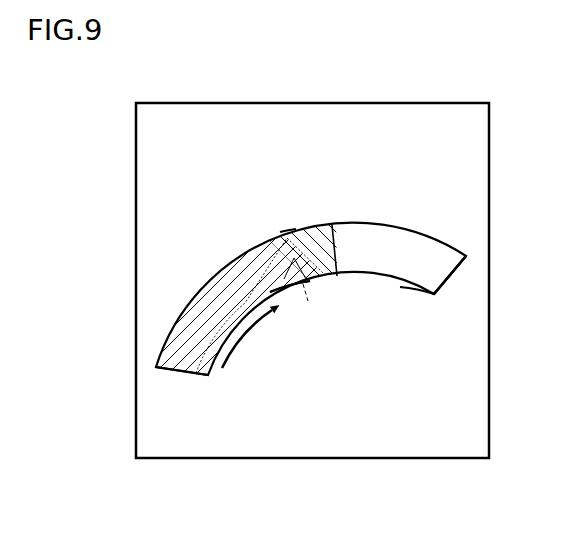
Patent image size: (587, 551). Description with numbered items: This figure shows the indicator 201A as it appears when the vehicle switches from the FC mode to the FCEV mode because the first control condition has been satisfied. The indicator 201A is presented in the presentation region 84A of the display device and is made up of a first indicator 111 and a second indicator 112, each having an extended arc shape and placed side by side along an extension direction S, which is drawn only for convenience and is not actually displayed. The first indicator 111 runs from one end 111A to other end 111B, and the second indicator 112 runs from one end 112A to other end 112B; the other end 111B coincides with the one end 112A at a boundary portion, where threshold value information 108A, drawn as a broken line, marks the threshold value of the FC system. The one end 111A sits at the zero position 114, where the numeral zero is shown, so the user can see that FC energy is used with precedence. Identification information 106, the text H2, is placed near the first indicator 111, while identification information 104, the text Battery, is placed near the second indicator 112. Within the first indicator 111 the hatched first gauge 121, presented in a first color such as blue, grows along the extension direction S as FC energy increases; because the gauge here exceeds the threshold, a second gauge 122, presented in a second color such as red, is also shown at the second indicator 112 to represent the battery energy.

The presentation region 84A is at (468, 103).
The first indicator 111 is at (192, 295).
The identification information 104 is at (377, 192).
The first gauge 121 is at (207, 350).
The second gauge 122 is at (323, 280).
The identification information 106 is at (205, 232).
The threshold value information 108A is at (287, 230).
The extension direction S is at (241, 330).
The other end 111B is at (290, 282).
The one end 112A is at (290, 282).
The second indicator 112 is at (423, 292).
The indicator 201A is at (471, 230).
The other end 112B is at (452, 275).
The zero position 114 is at (148, 380).
The one end 111A is at (178, 375).